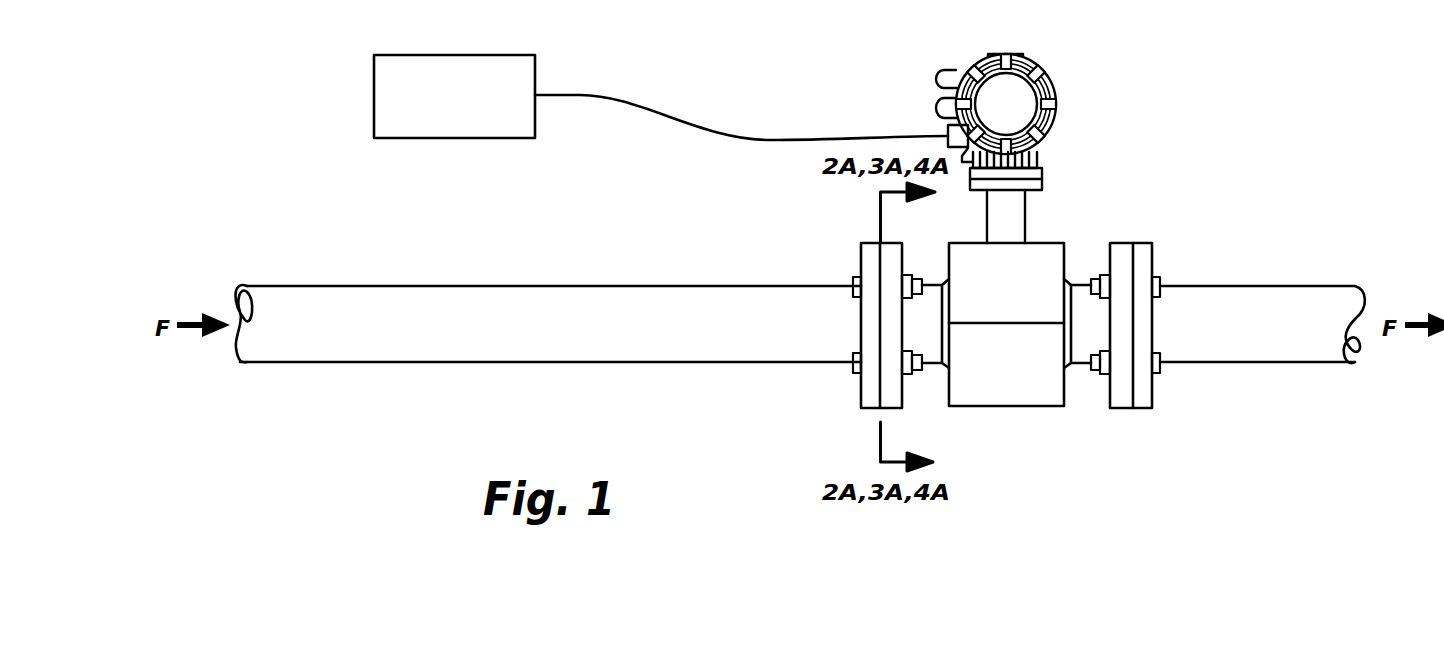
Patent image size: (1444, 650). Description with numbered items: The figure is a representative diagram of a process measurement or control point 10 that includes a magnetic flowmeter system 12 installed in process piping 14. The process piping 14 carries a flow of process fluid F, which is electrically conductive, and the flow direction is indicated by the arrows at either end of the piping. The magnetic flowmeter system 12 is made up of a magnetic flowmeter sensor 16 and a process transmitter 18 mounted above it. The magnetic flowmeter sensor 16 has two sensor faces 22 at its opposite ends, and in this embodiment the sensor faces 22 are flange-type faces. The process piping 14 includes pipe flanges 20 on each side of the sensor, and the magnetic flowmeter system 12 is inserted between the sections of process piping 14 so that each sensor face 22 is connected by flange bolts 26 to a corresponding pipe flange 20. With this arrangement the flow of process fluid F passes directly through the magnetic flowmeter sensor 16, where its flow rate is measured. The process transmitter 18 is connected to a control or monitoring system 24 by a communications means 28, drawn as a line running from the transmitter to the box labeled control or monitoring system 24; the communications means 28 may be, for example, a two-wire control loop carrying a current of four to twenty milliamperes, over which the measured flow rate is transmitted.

The process measurement or control point 10 is at (1234, 84).
The magnetic flowmeter system 12 is at (1035, 132).
The process piping 14 is at (607, 368).
The magnetic flowmeter sensor 16 is at (1062, 232).
The process transmitter 18 is at (1054, 123).
The pipe flanges 20 is at (871, 242).
The sensor faces 22 is at (870, 392).
The control or monitoring system 24 is at (470, 55).
The flange bolts 26 is at (854, 276).
The communications means 28 is at (722, 132).